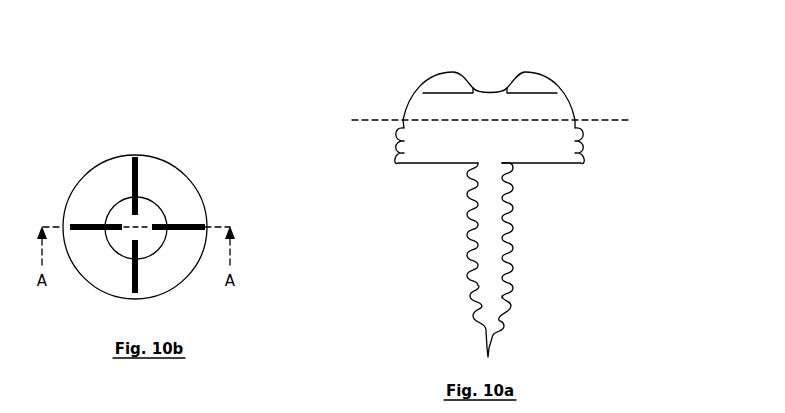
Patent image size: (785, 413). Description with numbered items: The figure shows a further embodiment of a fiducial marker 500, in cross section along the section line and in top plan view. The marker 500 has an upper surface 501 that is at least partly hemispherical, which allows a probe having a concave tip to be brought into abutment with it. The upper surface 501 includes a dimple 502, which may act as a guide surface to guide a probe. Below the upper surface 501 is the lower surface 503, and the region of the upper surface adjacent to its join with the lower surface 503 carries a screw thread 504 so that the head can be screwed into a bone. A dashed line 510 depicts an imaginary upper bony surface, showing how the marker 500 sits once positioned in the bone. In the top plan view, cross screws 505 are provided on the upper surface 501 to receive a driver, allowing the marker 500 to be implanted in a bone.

In FIG. 10A, the fiducial marker 500 is at (383, 112).
In FIG. 10A, the upper surface 501 is at (417, 86).
In FIG. 10B, the upper surface 501 is at (183, 210).
In FIG. 10A, the dimple 502 is at (490, 88).
In FIG. 10B, the dimple 502 is at (147, 232).
In FIG. 10A, the lower surface 503 is at (433, 163).
In FIG. 10A, the screw thread 504 is at (580, 138).
In FIG. 10B, the cross screws 505 is at (130, 157).
In FIG. 10A, the dashed line 510 is at (597, 120).